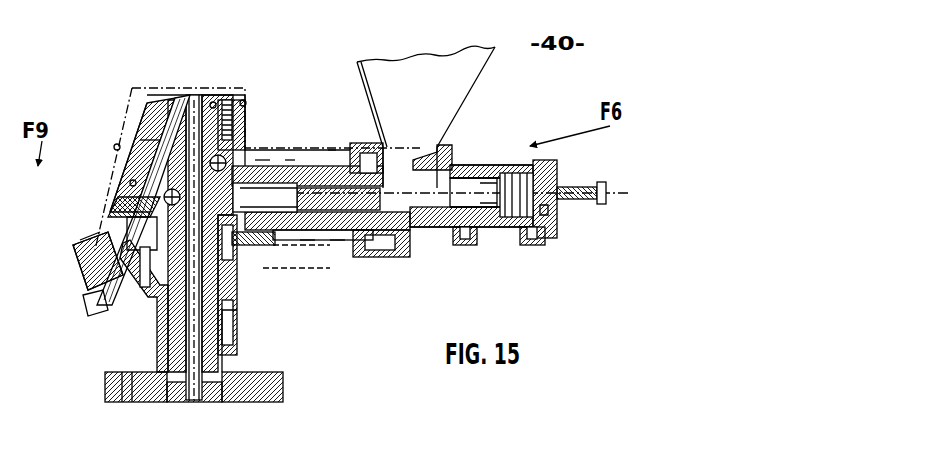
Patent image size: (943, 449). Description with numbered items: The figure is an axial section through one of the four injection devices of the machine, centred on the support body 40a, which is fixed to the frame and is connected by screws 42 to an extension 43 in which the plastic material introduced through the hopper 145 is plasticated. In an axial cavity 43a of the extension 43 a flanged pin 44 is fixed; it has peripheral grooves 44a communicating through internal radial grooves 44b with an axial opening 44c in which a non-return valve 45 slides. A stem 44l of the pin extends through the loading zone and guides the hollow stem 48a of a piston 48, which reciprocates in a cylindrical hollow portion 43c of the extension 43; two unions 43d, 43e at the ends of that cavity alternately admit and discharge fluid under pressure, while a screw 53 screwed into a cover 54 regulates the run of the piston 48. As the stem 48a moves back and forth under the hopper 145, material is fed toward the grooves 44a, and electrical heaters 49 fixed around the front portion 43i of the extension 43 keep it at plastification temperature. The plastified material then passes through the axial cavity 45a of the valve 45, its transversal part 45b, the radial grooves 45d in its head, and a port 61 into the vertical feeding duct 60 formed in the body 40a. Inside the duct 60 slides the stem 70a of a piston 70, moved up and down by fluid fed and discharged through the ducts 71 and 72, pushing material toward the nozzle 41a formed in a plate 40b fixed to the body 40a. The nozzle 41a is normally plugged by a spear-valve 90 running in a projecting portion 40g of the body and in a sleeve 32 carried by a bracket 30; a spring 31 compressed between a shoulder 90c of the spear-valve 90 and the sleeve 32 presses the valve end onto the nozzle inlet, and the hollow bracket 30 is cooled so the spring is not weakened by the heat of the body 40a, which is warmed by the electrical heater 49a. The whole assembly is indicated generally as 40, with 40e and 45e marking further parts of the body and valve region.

The hopper 145 is at (432, 72).
The feeder assembly 40 is at (295, 152).
The support body 40a is at (158, 374).
The plate 40b is at (158, 100).
The housing body 40e is at (230, 100).
The projecting portion 40g is at (140, 146).
The nozzle 41a is at (187, 86).
The screws 42 is at (252, 249).
The extension 43 is at (490, 160).
The axial cavity 43a is at (298, 212).
The cylindrical hollow portion 43c is at (512, 170).
The union 43d is at (531, 243).
The union 43e is at (458, 246).
The front portion 43i is at (342, 255).
The flanged pin 44 is at (372, 142).
The peripheral grooves 44a is at (325, 170).
The internal radial grooves 44b is at (300, 162).
The axial opening 44c is at (307, 254).
The stem 44l is at (455, 160).
The non-return valve 45 is at (290, 160).
The axial cavity 45a is at (270, 160).
The transversal part 45b is at (268, 148).
The radial grooves 45d is at (236, 268).
The locking bolt 45e is at (257, 150).
The piston 48 is at (530, 209).
The hollow stem 48a is at (484, 210).
The electrical heaters 49 is at (332, 150).
The electrical heater 49a is at (218, 101).
The screw 53 is at (588, 195).
The cover 54 is at (546, 212).
The feeding duct 60 is at (142, 140).
The port 61 is at (150, 240).
The piston 70 is at (242, 402).
The stem 70a is at (130, 305).
The duct 71 is at (236, 296).
The duct 72 is at (198, 405).
The spear-valve 90 is at (117, 203).
The shoulder 90c is at (100, 243).
The bracket 30 is at (73, 266).
The spring 31 is at (100, 249).
The sleeve 32 is at (85, 283).